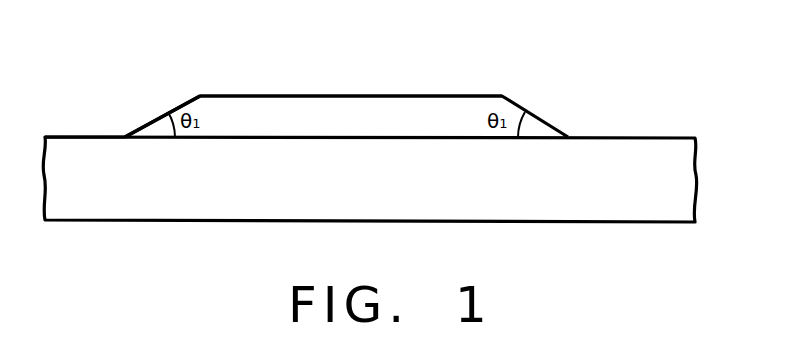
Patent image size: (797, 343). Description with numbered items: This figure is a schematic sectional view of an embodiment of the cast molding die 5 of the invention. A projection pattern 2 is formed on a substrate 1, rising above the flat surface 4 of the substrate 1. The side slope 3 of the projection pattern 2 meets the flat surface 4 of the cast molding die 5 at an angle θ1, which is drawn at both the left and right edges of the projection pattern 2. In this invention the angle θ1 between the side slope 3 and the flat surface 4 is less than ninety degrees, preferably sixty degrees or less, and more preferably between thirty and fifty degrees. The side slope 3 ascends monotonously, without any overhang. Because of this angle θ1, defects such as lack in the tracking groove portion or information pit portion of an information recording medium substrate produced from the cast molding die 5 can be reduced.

The substrate 1 is at (680, 187).
The projection pattern 2 is at (457, 97).
The side slope 3 is at (187, 104).
The flat surface 4 is at (90, 137).
The cast molding die 5 is at (369, 92).